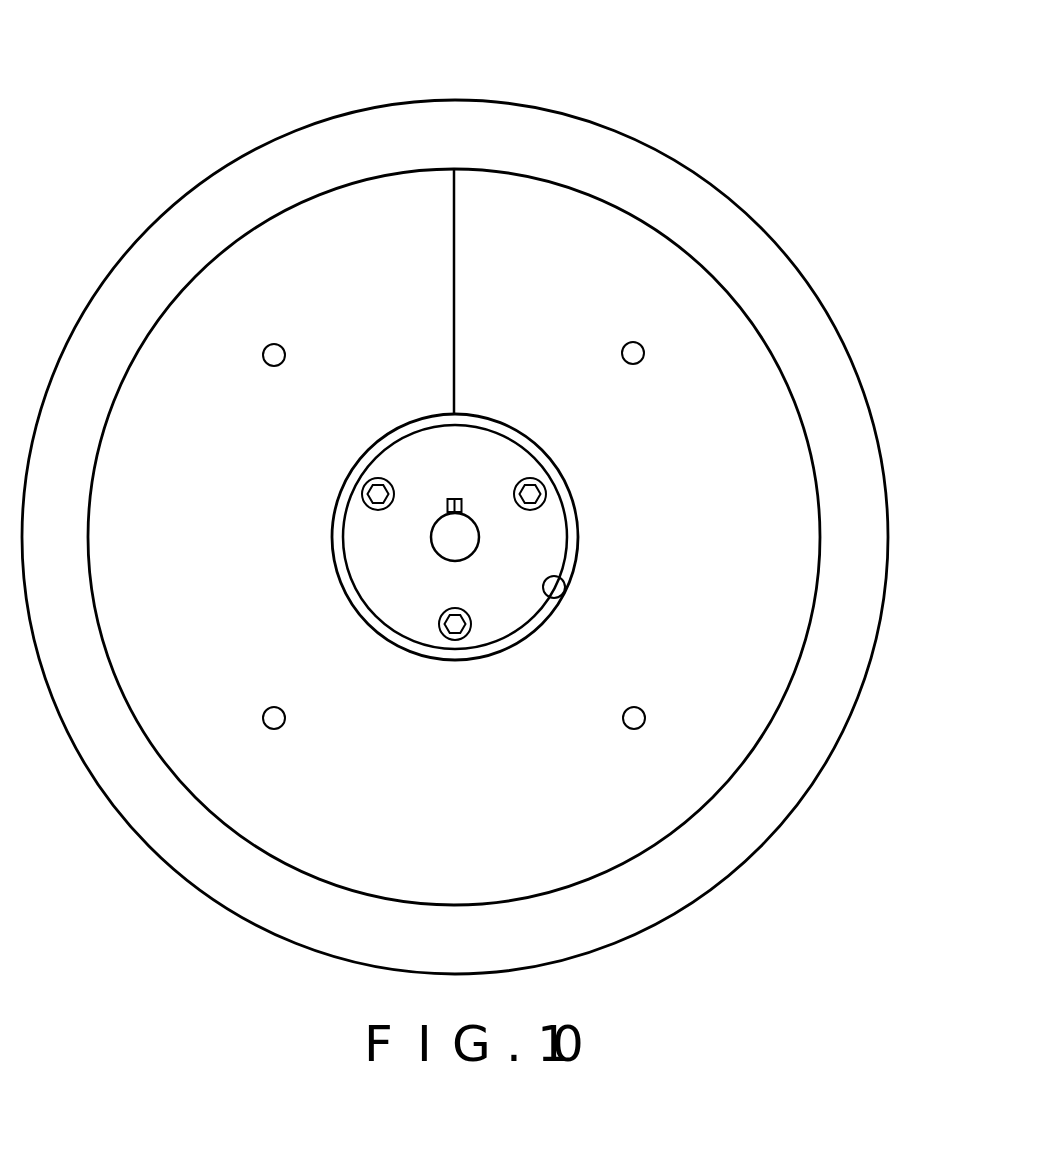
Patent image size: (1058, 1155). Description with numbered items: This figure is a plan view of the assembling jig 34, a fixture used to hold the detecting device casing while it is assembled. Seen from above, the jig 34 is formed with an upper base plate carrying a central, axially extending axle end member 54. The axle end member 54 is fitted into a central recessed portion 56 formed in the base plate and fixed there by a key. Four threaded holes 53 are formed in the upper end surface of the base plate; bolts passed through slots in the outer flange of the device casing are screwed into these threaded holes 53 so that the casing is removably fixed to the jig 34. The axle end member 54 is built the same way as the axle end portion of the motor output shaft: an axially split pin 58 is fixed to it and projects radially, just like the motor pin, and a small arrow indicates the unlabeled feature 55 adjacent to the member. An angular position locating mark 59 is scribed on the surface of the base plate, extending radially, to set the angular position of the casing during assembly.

The assembling jig 34 is at (638, 103).
The threaded holes 53 is at (285, 352).
The axle end member 54 is at (438, 538).
The bolt holes 55 is at (486, 524).
The central recessed portion 56 is at (563, 596).
The axially split pin 58 is at (454, 498).
The angular position locating mark 59 is at (455, 249).